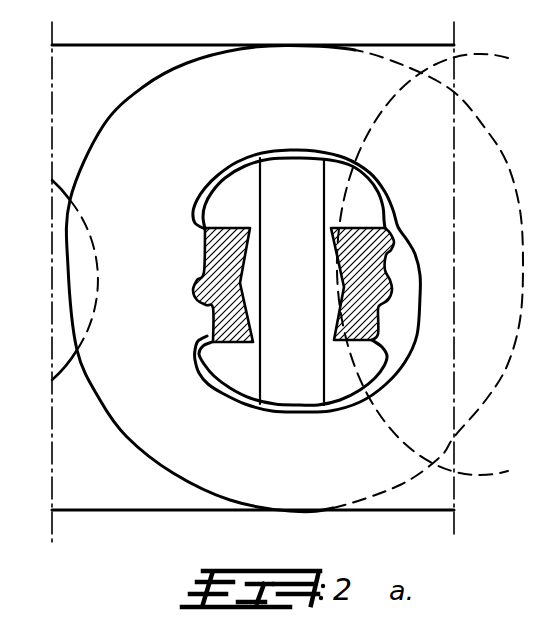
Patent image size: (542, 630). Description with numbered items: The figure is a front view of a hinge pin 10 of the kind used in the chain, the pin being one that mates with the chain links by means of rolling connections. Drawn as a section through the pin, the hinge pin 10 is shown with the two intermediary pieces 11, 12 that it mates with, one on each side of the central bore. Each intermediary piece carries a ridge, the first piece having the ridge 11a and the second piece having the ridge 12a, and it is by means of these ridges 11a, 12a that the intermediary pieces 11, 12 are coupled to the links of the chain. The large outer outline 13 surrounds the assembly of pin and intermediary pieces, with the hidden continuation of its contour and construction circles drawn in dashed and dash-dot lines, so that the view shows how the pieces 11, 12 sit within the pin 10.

The hinge pin 10 is at (248, 182).
The intermediary piece 11 is at (212, 315).
The ridge 11a is at (197, 287).
The intermediary piece 12 is at (374, 251).
The ridge 12a is at (391, 288).
The circular body 13 is at (129, 108).